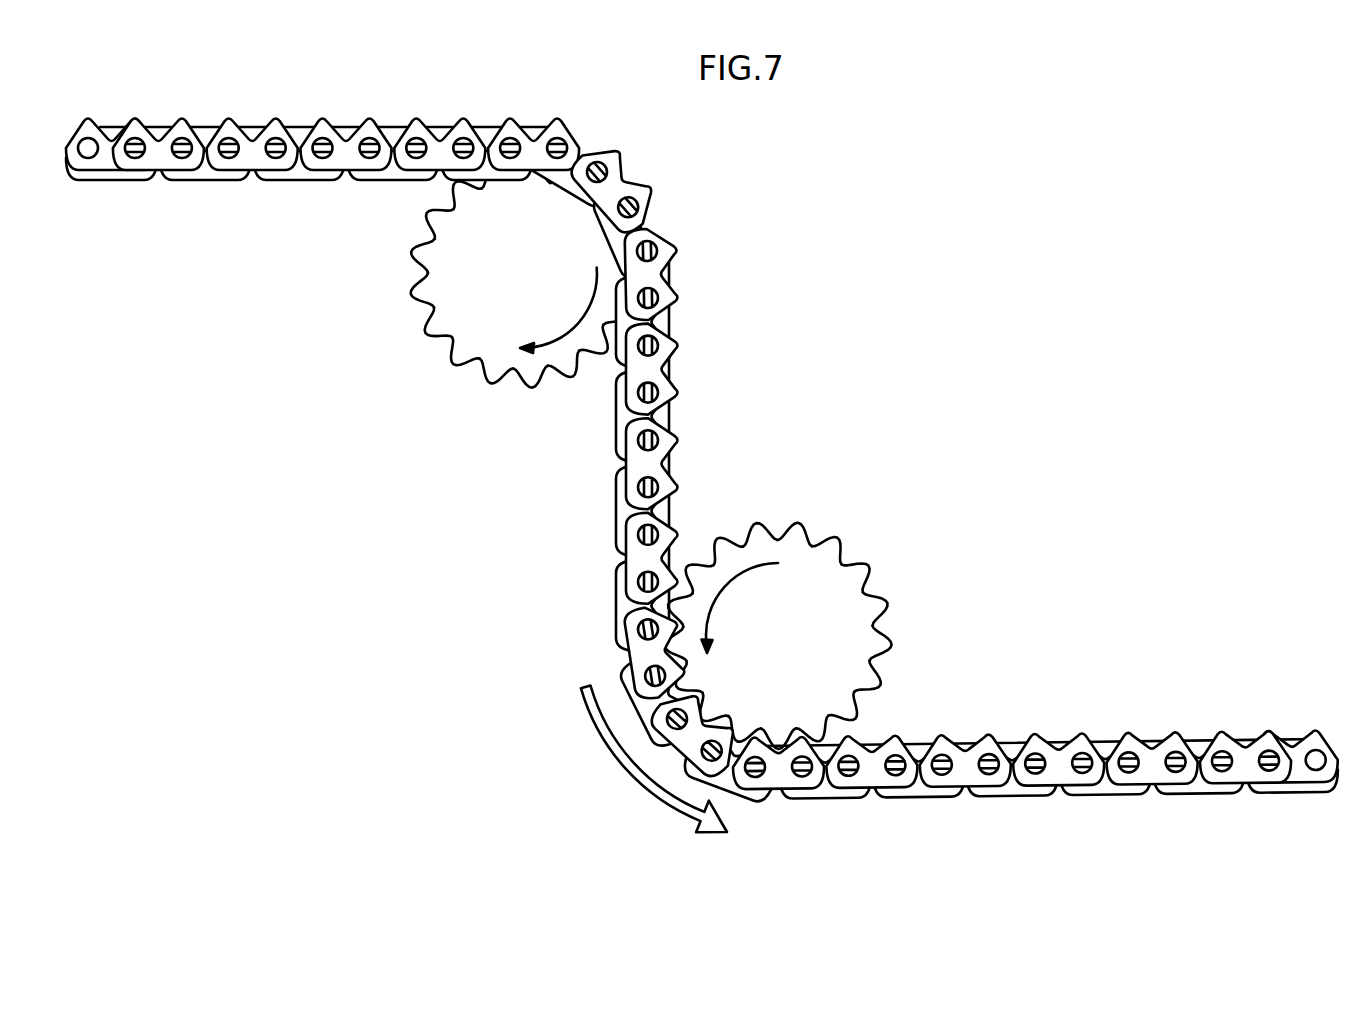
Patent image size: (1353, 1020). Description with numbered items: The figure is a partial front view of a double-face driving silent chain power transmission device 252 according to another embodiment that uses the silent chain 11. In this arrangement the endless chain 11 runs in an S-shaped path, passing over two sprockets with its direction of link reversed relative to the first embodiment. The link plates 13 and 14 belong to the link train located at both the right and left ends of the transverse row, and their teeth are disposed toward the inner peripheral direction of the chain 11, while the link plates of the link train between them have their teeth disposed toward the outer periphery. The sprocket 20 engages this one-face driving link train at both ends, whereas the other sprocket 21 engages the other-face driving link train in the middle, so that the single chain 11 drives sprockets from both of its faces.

The silent chain 11 is at (702, 496).
The link plate 13 is at (1246, 770).
The link plate 14 is at (1212, 786).
The sprocket 20 is at (837, 604).
The back drive sprocket 21 is at (477, 335).
The silent chain power transmission device 252 is at (702, 496).